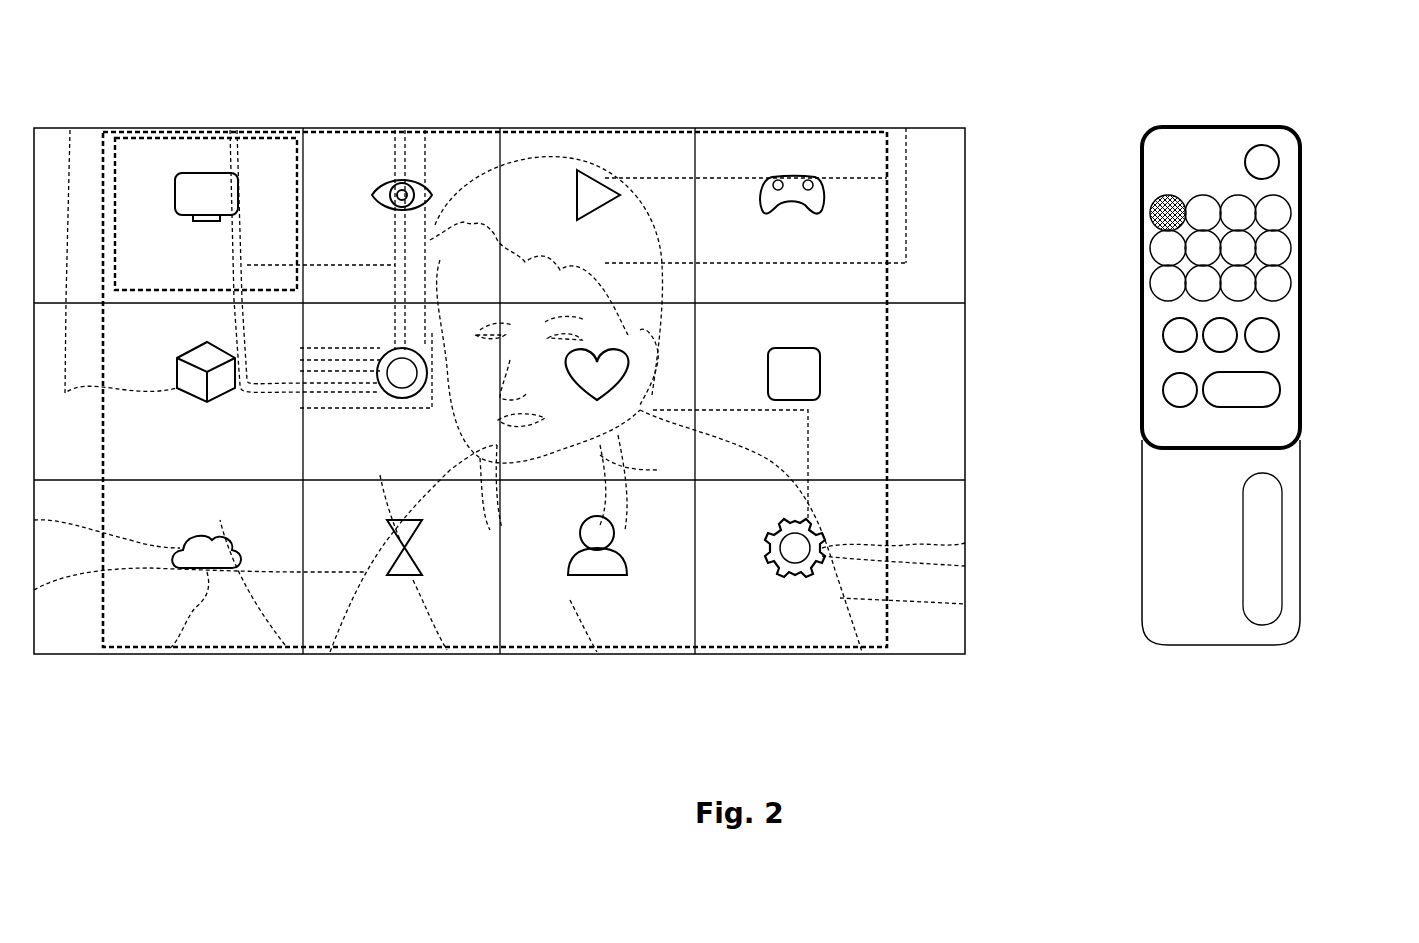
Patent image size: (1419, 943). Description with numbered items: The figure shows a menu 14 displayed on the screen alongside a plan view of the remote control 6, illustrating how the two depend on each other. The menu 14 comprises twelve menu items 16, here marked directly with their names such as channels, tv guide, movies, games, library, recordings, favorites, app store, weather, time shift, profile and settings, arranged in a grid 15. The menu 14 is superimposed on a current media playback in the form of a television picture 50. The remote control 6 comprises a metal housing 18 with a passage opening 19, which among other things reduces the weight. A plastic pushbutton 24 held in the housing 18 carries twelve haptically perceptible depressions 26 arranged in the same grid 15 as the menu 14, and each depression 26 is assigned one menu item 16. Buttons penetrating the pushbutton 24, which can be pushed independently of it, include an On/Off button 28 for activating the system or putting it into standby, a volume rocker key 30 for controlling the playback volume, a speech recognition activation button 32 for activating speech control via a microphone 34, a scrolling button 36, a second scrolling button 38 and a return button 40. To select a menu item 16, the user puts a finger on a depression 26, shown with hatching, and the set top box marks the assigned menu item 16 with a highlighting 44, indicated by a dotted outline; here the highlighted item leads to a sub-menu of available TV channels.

The remote control 6 is at (1239, 353).
The menu 14 is at (982, 101).
The grid 15 is at (887, 130).
The menu item 16 is at (232, 178).
The metal housing 18 is at (1290, 467).
The passage opening 19 is at (1265, 562).
The pushbutton 24 is at (1162, 420).
The depression 26 is at (1160, 220).
The On/Off button 28 is at (1263, 155).
The volume rocker key 30 is at (1280, 390).
The speech recognition activation button 32 is at (1163, 390).
The microphone 34 is at (1190, 160).
The scrolling button 36 is at (1163, 335).
The second scrolling button 38 is at (1280, 335).
The return button 40 is at (1218, 345).
The highlighting 44 is at (115, 135).
The television picture 50 is at (505, 282).